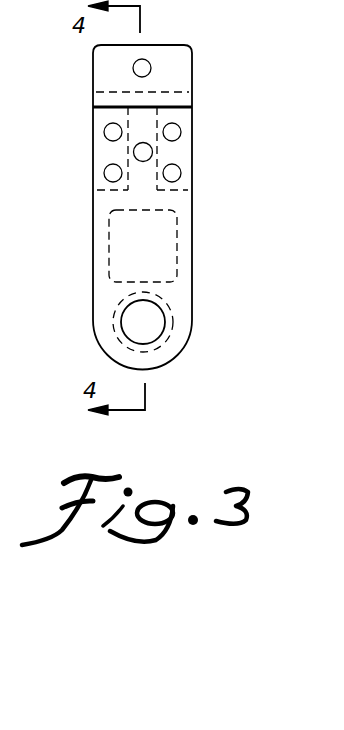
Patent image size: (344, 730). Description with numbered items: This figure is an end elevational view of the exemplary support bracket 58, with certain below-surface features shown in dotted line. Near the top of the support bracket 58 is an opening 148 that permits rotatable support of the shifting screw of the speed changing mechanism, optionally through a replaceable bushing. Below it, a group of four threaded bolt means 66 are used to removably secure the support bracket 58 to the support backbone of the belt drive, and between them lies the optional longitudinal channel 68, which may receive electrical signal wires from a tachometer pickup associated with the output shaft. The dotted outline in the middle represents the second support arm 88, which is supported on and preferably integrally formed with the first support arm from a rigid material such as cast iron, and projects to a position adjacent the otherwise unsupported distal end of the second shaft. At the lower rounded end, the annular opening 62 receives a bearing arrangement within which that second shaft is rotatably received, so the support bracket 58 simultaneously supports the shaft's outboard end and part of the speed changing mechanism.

The support bracket 58 is at (210, 205).
The opening 148 is at (147, 59).
The bolt means 66 is at (106, 127).
The longitudinal channel 68 is at (134, 153).
The second support arm 88 is at (98, 273).
The annular opening 62 is at (157, 343).